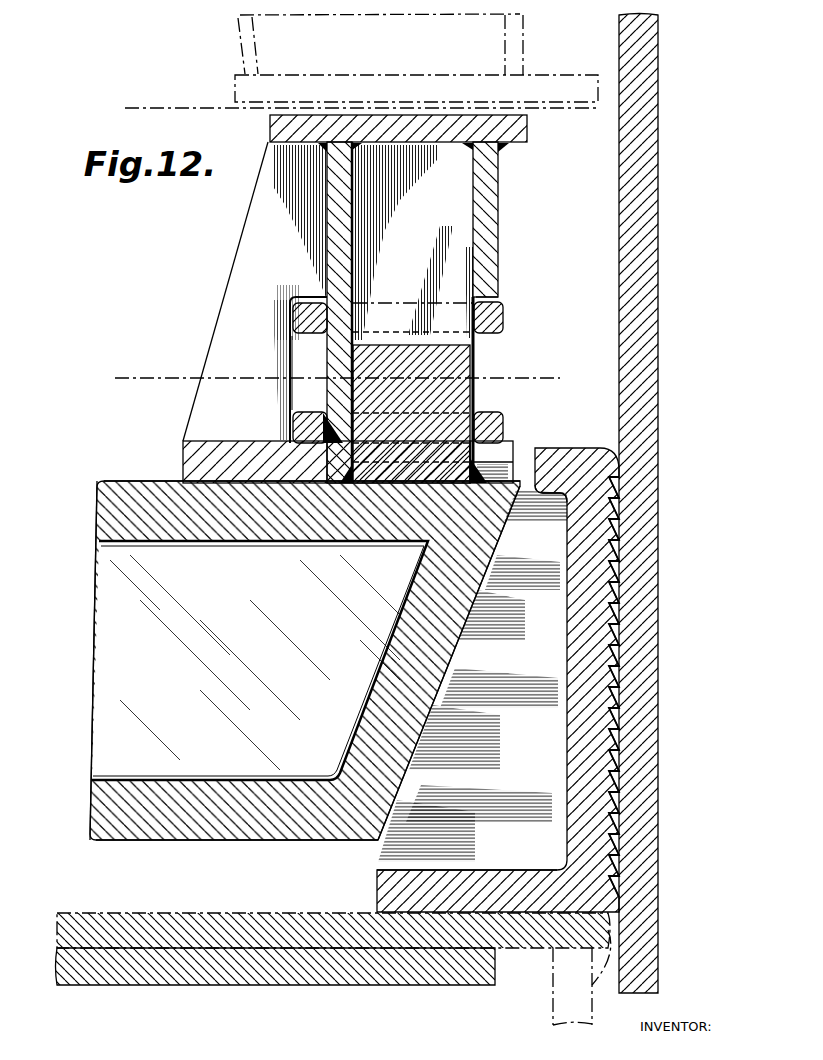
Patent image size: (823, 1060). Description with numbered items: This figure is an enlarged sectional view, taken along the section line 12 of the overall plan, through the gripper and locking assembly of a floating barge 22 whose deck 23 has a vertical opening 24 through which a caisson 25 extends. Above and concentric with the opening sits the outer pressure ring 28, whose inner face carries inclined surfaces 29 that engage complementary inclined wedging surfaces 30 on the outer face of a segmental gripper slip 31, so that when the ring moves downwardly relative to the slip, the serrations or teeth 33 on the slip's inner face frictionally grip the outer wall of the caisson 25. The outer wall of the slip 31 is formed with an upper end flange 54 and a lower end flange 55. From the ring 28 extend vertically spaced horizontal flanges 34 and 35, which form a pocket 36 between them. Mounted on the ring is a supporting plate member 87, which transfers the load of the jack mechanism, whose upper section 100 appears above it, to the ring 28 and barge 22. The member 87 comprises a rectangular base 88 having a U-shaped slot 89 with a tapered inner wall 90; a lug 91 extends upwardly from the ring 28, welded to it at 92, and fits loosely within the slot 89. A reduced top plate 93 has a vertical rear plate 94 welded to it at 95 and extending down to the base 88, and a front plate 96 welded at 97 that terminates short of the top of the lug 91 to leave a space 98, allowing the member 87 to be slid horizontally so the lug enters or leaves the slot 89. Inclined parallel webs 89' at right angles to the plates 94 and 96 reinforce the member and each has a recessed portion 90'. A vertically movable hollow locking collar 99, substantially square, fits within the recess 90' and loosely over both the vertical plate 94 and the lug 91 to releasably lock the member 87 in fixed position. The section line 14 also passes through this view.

The upper section 100 is at (242, 90).
The section line 12— 12 is at (541, 120).
The section line 14 is at (545, 392).
The supporting plate member 87 is at (498, 211).
The top plate member 93 is at (512, 136).
The weld 95 is at (322, 150).
The vertical rear plate 94 is at (330, 222).
The front plate 96 is at (500, 251).
The weld 97 is at (505, 151).
The opening or space 98 is at (485, 298).
The locking collar 99 is at (283, 308).
The inclined parallel webs 89' is at (245, 368).
The recessed portion 90' is at (229, 366).
The lug 91 is at (455, 367).
The U-shaped slot 89 is at (496, 390).
The rectangular base 88 is at (215, 470).
The weld 92 is at (353, 480).
The tapered inner wall 90 is at (283, 511).
The pressure ring 28 is at (99, 522).
The pocket 36 is at (115, 657).
The upper horizontal flange 34 is at (131, 491).
The inclined surfaces 29 is at (445, 656).
The lower horizontal flange 35 is at (182, 812).
The segmental gripper slip 31 is at (597, 541).
The lower end flange 55 is at (470, 878).
The upper end flange 54 is at (551, 496).
The serrations or teeth 33 is at (610, 683).
The inclined wedging surfaces 30 is at (527, 470).
The caisson 25 is at (657, 360).
The deck 23 is at (205, 918).
The floating barge 22 is at (116, 987).
The vertical opening 24 is at (590, 991).